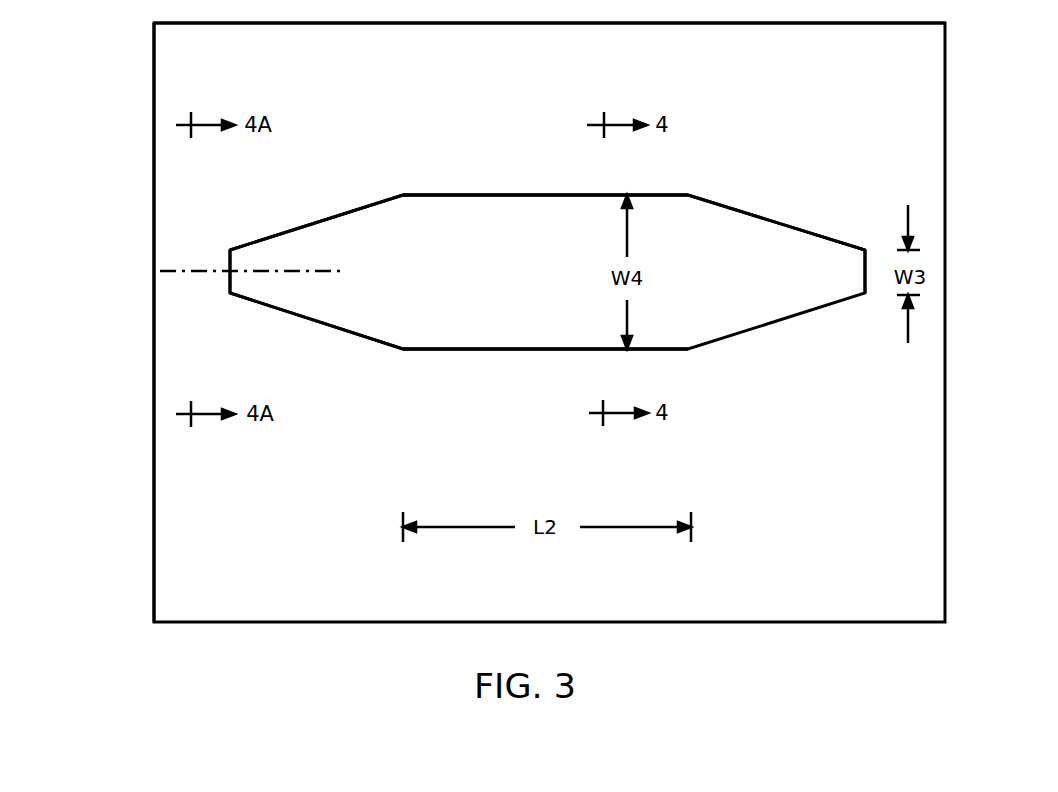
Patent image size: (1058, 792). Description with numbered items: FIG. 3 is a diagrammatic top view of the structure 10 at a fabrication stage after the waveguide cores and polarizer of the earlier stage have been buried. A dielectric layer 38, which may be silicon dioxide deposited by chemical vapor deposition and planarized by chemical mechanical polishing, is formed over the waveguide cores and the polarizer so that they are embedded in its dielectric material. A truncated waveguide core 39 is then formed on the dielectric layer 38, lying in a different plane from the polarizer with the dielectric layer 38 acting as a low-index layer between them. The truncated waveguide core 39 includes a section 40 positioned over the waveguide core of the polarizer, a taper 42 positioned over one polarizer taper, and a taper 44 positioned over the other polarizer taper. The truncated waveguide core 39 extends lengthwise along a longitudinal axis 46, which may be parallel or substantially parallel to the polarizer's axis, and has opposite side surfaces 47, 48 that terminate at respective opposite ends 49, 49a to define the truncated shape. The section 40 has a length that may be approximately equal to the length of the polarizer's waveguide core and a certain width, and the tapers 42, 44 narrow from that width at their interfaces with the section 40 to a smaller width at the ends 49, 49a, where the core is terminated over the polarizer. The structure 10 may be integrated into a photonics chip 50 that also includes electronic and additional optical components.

The structure 10 is at (297, 93).
The dielectric layer 38 is at (202, 502).
The truncated waveguide core 39 is at (411, 144).
The section 40 is at (505, 228).
The taper 42 is at (347, 290).
The taper 44 is at (758, 250).
The longitudinal axis 46 is at (267, 269).
The side surface 47 is at (551, 195).
The side surface 48 is at (579, 348).
The end 49 is at (230, 290).
The end 49a is at (867, 280).
The photonics chip 50 is at (136, 96).